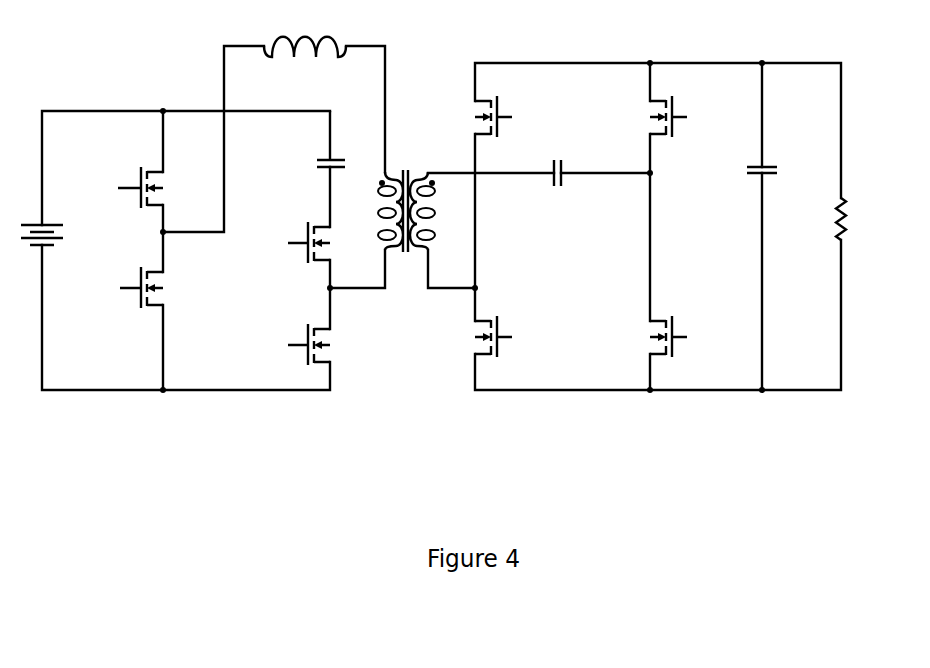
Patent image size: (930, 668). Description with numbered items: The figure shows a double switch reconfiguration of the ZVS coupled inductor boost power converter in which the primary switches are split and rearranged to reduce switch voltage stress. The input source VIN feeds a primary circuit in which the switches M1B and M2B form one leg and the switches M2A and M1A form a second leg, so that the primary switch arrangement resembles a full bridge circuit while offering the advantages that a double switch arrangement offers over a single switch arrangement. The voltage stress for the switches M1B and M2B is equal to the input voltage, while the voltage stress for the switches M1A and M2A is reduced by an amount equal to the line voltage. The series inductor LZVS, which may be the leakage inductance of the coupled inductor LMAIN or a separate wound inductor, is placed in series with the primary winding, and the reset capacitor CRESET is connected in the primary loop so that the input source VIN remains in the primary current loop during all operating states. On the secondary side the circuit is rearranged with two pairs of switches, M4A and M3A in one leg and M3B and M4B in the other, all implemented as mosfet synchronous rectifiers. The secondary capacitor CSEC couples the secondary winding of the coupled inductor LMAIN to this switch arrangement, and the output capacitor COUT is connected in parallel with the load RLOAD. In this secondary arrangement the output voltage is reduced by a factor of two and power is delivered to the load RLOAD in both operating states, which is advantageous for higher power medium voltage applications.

The input source VIN is at (61, 238).
The primary switch M1B is at (151, 187).
The primary switch M2B is at (135, 287).
The series inductor LZVS is at (305, 34).
The reset capacitor CRESET is at (292, 145).
The primary switch M2A is at (301, 242).
The primary switch M1A is at (319, 344).
The coupled inductor LMAIN is at (408, 200).
The secondary switch M4A is at (498, 116).
The secondary switch M3A is at (485, 336).
The secondary switch M3B is at (656, 116).
The secondary switch M4B is at (675, 336).
The secondary capacitor CSEC is at (557, 188).
The output capacitor COUT is at (781, 170).
The load RLOAD is at (870, 219).